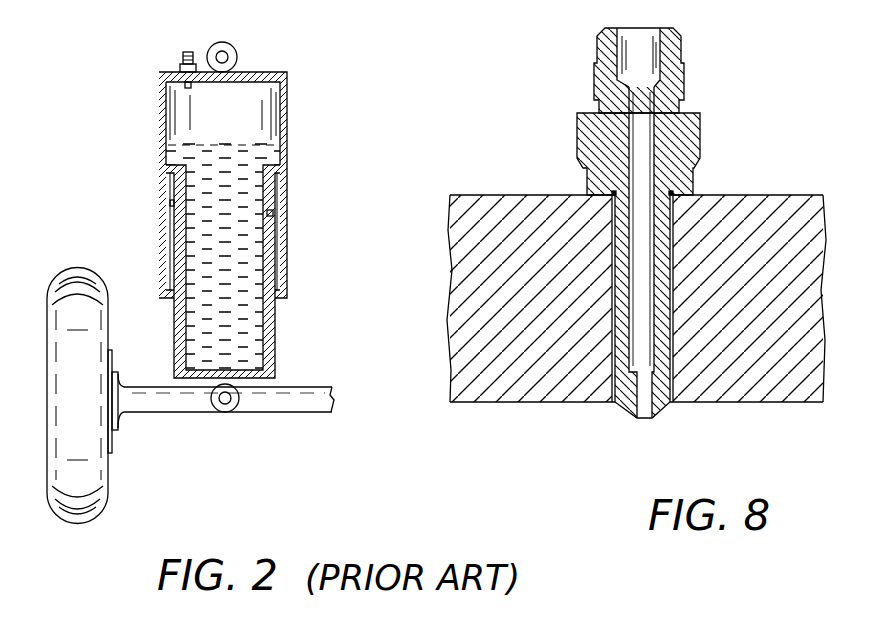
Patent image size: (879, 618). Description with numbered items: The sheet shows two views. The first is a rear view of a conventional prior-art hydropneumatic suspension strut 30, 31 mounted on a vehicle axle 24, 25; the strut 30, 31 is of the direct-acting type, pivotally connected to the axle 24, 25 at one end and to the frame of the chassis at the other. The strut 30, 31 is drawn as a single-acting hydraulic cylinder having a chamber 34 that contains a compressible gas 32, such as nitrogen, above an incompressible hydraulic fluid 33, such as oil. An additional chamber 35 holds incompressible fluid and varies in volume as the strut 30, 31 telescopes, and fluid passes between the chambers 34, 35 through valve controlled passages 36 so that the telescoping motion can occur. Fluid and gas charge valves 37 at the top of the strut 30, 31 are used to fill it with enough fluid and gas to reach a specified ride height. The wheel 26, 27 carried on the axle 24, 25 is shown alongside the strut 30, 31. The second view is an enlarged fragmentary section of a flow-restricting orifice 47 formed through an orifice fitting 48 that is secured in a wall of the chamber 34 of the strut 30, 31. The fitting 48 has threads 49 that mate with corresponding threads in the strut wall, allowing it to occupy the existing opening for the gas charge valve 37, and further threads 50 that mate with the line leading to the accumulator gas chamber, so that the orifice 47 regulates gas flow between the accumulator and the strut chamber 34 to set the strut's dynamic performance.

In FIG. 2, the axle 24 is at (274, 389).
In FIG. 2, the axle 25 is at (300, 387).
In FIG. 2, the wheel 26 is at (147, 396).
In FIG. 2, the wheel 27 is at (110, 480).
In FIG. 2, the strut 30 is at (289, 165).
In FIG. 8, the strut 30 is at (637, 164).
In FIG. 2, the strut 31 is at (288, 58).
In FIG. 8, the strut 31 is at (786, 194).
In FIG. 2, the compressible gas 32 is at (260, 113).
In FIG. 8, the compressible gas 32 is at (566, 430).
In FIG. 2, the incompressible hydraulic fluid 33 is at (195, 204).
In FIG. 2, the chamber 34 is at (183, 98).
In FIG. 2, the additional chamber 35 is at (282, 267).
In FIG. 2, the valve controlled passages 36 is at (272, 244).
In FIG. 2, the fluid and gas charge valves 37 is at (182, 60).
In FIG. 8, the orifice 47 is at (645, 418).
In FIG. 8, the orifice fitting 48 is at (706, 122).
In FIG. 8, the threads 49 is at (676, 232).
In FIG. 8, the threads 50 is at (685, 80).